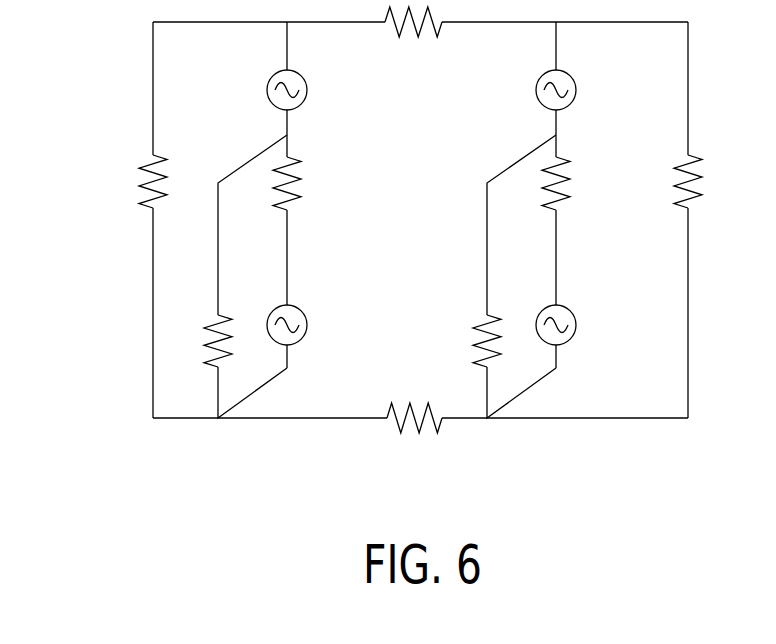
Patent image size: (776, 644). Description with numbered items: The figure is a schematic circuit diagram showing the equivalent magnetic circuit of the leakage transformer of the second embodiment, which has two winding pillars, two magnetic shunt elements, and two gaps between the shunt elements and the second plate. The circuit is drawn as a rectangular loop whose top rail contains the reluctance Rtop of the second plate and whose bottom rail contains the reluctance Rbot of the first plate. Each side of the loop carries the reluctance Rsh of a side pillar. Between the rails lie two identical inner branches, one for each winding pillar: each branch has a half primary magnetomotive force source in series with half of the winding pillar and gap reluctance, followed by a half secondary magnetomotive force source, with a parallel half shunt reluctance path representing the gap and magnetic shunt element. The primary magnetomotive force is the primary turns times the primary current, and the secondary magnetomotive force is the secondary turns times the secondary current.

The reluctance of the second plate Rtop is at (420, 37).
The reluctance of the first plate Rbot is at (420, 438).
The reluctance of the side pillar Rsh is at (421, 220).